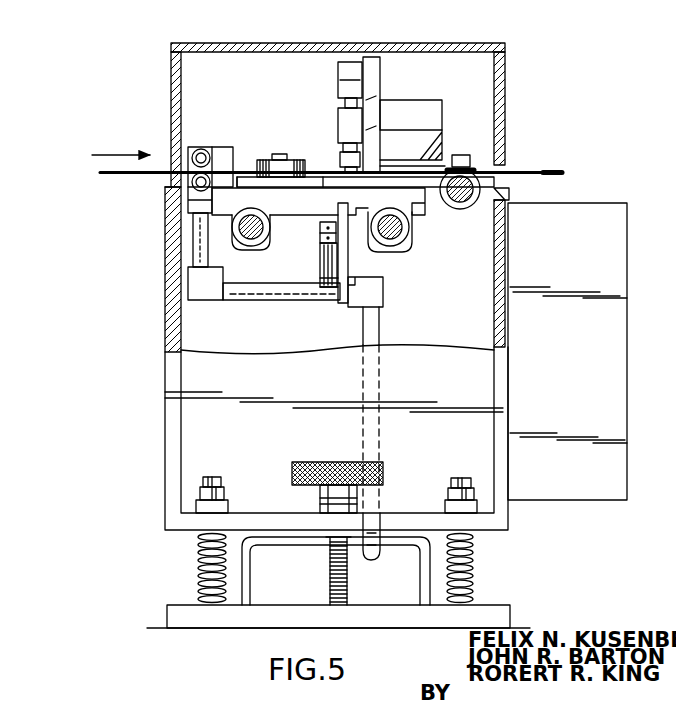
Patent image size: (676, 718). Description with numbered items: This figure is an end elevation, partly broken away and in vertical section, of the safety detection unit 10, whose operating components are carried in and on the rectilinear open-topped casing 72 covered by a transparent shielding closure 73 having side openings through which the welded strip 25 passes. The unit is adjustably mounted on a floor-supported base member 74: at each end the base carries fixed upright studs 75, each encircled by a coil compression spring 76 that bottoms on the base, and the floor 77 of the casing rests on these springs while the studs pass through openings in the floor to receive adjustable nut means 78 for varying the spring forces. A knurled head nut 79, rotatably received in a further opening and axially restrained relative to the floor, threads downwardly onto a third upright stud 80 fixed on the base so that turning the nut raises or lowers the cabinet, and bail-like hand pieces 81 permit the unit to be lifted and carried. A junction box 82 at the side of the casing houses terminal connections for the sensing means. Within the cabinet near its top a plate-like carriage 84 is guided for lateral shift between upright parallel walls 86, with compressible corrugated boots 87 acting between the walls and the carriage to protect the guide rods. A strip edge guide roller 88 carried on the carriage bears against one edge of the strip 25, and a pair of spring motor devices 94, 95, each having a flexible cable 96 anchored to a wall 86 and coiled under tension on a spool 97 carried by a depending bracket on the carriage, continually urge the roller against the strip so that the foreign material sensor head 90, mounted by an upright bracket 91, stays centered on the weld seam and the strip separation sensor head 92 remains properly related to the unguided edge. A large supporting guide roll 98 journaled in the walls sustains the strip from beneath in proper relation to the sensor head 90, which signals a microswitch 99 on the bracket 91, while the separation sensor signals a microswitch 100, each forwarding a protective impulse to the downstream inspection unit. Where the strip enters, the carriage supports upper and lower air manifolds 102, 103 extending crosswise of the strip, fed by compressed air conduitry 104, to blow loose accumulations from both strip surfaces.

The detection unit 10 is at (84, 406).
The welded strip 25 is at (546, 170).
The casing 72 is at (506, 272).
The shielding closure 73 is at (498, 98).
The base member 74 is at (207, 622).
The upright studs 75 is at (205, 572).
The coil compression spring 76 is at (474, 562).
The floor 77 is at (264, 520).
The adjustable nut means 78 is at (475, 492).
The knurled head nut 79 is at (383, 467).
The third upright stud 80 is at (331, 563).
The hand pieces 81 is at (241, 597).
The junction box 82 is at (613, 333).
The carriage 84 is at (412, 193).
The upright parallel walls 86 is at (478, 326).
The corrugated boots 87 is at (232, 227).
The strip edge guide roller 88 is at (288, 167).
The foreign material sensor head 90 is at (470, 159).
The upright bracket 91 is at (377, 118).
The strip separation sensor head 92 is at (343, 118).
The spring motor device 94 is at (321, 252).
The spring motor device 95 is at (320, 227).
The flexible cable 96 is at (330, 238).
The spool 97 is at (338, 300).
The supporting guide roll 98 is at (466, 210).
The microswitch 99 is at (428, 110).
The microswitch 100 is at (352, 68).
The upper air manifold 102 is at (201, 149).
The lower air manifold 103 is at (172, 192).
The compressed air conduitry 104 is at (253, 294).